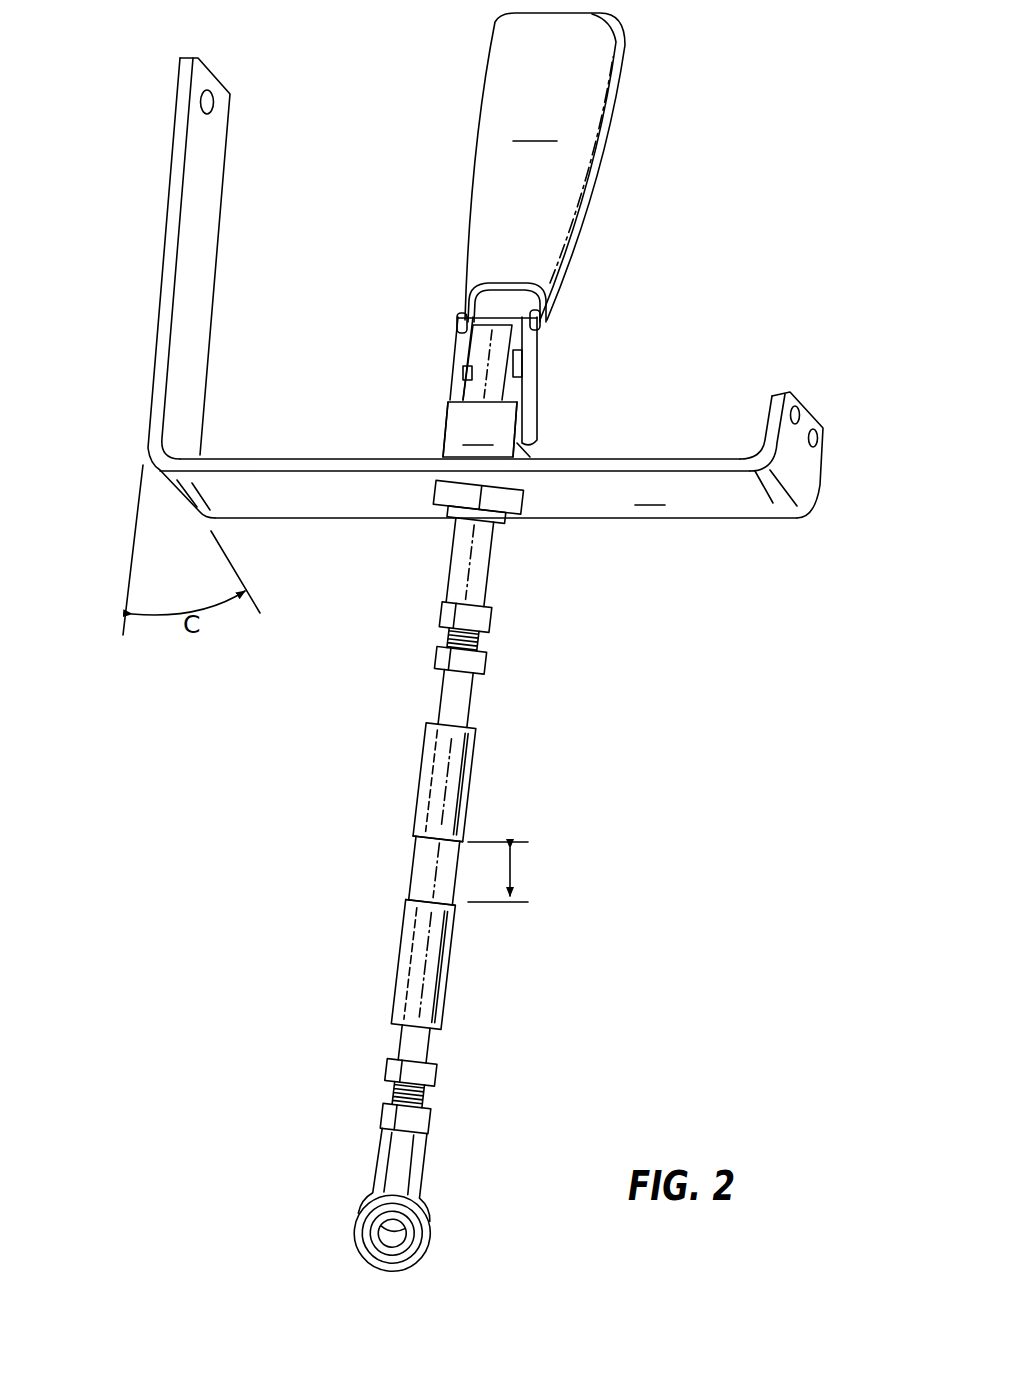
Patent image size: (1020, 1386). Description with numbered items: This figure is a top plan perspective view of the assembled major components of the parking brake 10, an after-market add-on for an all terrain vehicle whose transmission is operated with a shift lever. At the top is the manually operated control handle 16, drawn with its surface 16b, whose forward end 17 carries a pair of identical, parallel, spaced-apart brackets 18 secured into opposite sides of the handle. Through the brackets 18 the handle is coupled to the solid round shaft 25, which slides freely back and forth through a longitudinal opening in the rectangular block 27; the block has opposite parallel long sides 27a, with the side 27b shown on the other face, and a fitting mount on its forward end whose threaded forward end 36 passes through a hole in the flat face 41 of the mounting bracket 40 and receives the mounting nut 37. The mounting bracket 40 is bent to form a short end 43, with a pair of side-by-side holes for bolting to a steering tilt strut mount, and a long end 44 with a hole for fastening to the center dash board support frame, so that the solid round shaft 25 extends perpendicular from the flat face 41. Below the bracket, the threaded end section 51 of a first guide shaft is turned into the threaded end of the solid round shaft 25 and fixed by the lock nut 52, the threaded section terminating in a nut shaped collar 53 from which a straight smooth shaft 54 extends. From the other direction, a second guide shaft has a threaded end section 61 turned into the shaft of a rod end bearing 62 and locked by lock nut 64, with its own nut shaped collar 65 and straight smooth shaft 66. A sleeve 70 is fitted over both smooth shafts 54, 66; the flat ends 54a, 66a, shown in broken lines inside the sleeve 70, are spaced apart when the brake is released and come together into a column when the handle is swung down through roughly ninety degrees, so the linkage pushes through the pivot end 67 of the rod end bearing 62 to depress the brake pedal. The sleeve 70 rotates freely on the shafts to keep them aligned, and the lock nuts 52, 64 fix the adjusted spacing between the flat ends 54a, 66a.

The parking brake 10 is at (470, 877).
The control handle 16 is at (458, 126).
The lever surface 16b is at (537, 128).
The forward end 17 is at (470, 293).
The brackets 18 is at (462, 349).
The solid round shaft 25 is at (495, 562).
The rectangular block 27 is at (480, 429).
The long sides 27a is at (444, 438).
The block right side 27b is at (528, 448).
The threaded forward end 36 is at (452, 516).
The mounting nut 37 is at (530, 508).
The mounting bracket 40 is at (482, 288).
The face 41 is at (478, 488).
The short end 43 is at (802, 452).
The long end 44 is at (157, 342).
The threaded end section 51 is at (441, 655).
The lock nut 52 is at (441, 615).
The nut shaped collar 53 is at (488, 662).
The straight smooth shaft 54 is at (466, 779).
The flat end 54a is at (432, 838).
The threaded end section 61 is at (432, 1098).
The rod end bearing 62 is at (384, 1145).
The lock nut 64 is at (386, 1108).
The nut shaped collar 65 is at (387, 1065).
The straight smooth shaft 66 is at (405, 943).
The flat end 66a is at (418, 893).
The pivot end 67 is at (354, 1218).
The sleeve 70 is at (414, 851).